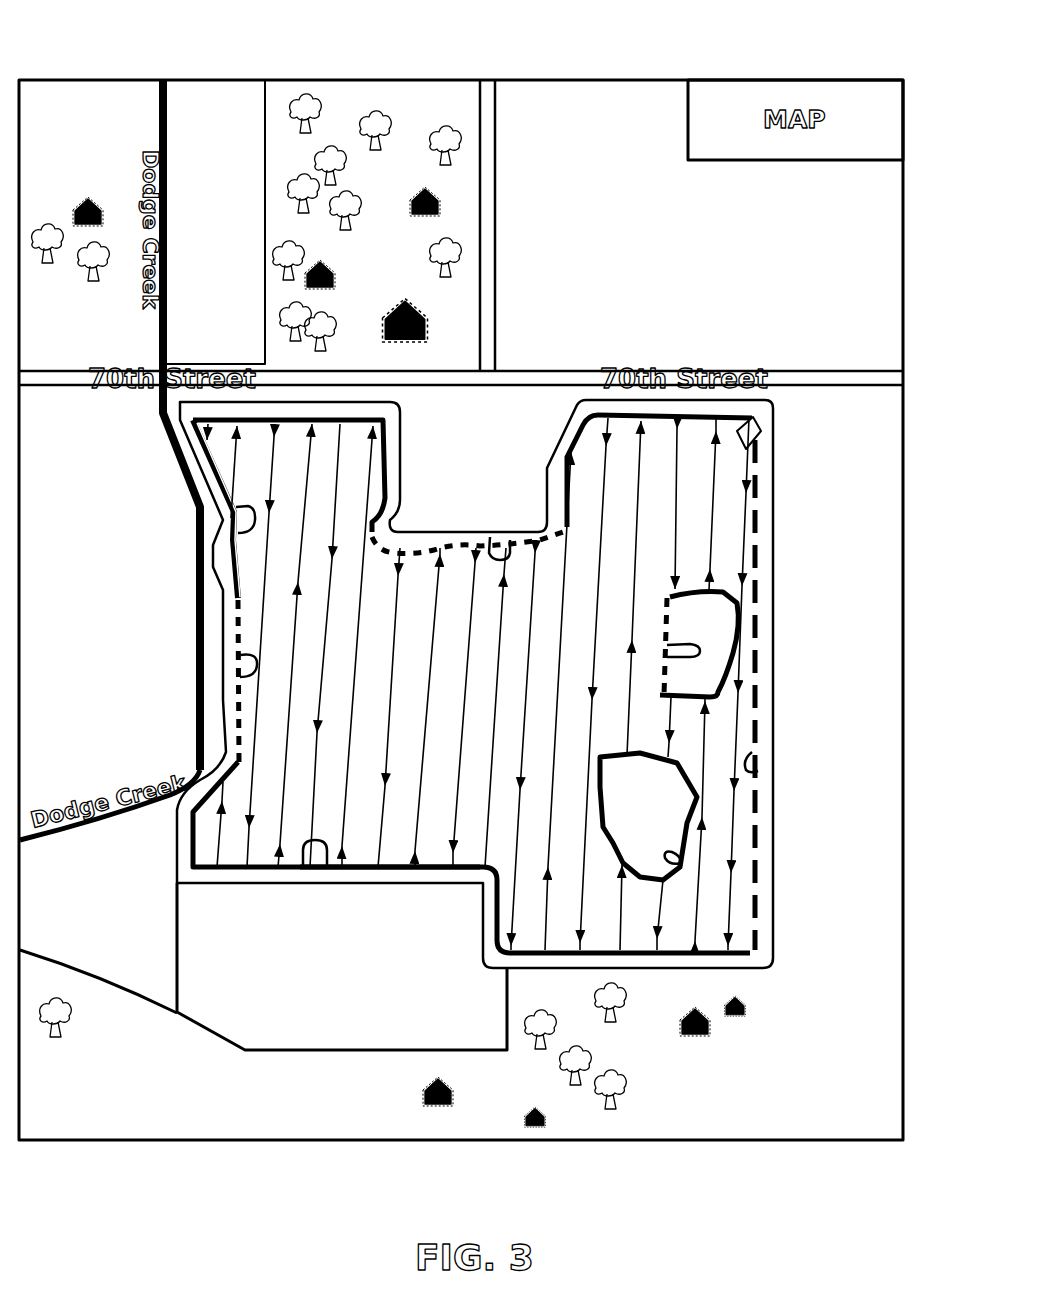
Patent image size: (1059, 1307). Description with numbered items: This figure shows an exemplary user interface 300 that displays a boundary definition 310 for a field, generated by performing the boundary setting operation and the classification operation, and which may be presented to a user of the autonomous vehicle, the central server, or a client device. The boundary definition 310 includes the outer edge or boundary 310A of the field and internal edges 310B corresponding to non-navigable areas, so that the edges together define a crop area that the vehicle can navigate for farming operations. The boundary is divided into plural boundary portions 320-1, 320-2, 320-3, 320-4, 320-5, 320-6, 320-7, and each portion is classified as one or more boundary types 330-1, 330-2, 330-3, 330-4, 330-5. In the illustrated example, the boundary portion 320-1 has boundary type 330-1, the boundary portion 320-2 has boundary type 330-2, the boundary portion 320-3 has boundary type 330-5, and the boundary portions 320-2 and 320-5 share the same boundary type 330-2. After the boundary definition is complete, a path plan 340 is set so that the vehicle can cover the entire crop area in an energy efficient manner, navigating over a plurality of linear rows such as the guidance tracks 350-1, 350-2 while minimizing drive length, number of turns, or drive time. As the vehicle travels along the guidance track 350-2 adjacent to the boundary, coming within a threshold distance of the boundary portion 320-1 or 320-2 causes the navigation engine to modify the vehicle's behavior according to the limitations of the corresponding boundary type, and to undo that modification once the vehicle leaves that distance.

The user interface 300 is at (122, 48).
The boundary definition 310 is at (785, 452).
The outer edge or boundary 310A is at (393, 418).
The internal edges 310B is at (723, 688).
The boundary portion 320-1 is at (250, 528).
The boundary portion 320-2 is at (240, 677).
The boundary portion 320-3 is at (490, 537).
The boundary portion 320-4 is at (315, 841).
The boundary portion 320-5 is at (667, 655).
The boundary portion 320-6 is at (682, 863).
The boundary portion 320-7 is at (758, 764).
The boundary type 330-1 is at (215, 478).
The boundary type 330-2 is at (236, 711).
The boundary type 330-3 is at (393, 872).
The boundary type 330-4 is at (762, 731).
The boundary type 330-5 is at (441, 541).
The path plan 340 is at (755, 420).
The linear row 350-1 is at (683, 550).
The guidance track 350-2 is at (258, 612).